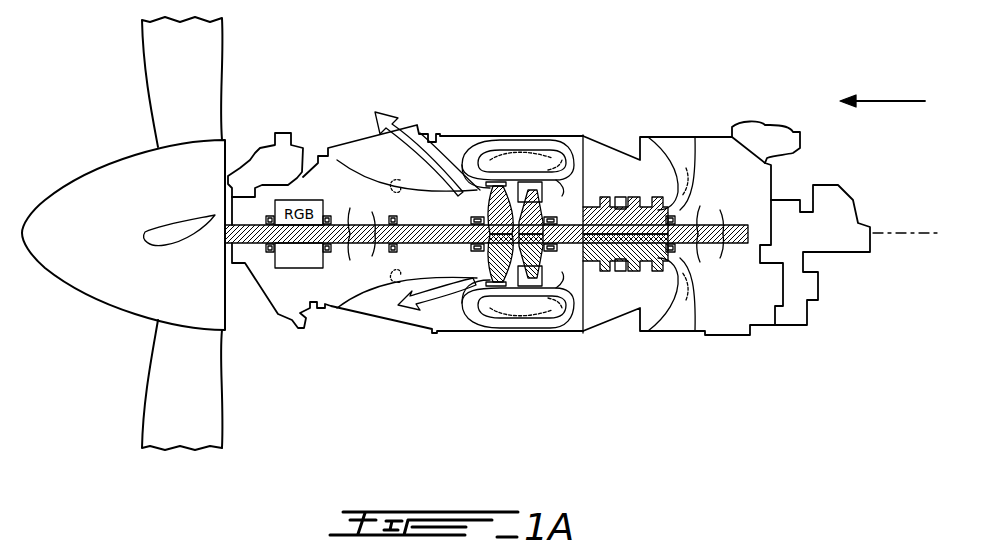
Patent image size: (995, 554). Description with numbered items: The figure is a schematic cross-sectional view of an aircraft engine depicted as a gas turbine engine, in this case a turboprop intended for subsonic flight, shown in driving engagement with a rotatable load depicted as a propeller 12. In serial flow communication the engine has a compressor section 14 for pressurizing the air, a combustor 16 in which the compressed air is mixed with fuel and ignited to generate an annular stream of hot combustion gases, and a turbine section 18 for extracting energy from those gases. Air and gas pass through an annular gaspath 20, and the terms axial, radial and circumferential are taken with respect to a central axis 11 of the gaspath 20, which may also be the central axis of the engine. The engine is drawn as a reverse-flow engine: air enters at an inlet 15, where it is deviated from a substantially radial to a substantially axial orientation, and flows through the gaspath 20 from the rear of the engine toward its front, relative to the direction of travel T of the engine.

The propeller 12 is at (200, 38).
The compressor section 14 is at (618, 158).
The inlet 15 is at (673, 146).
The combustor 16 is at (536, 322).
The turbine section 18 is at (480, 258).
The annular gaspath 20 is at (593, 322).
The central axis 11 is at (905, 238).
The direction of travel T is at (890, 102).